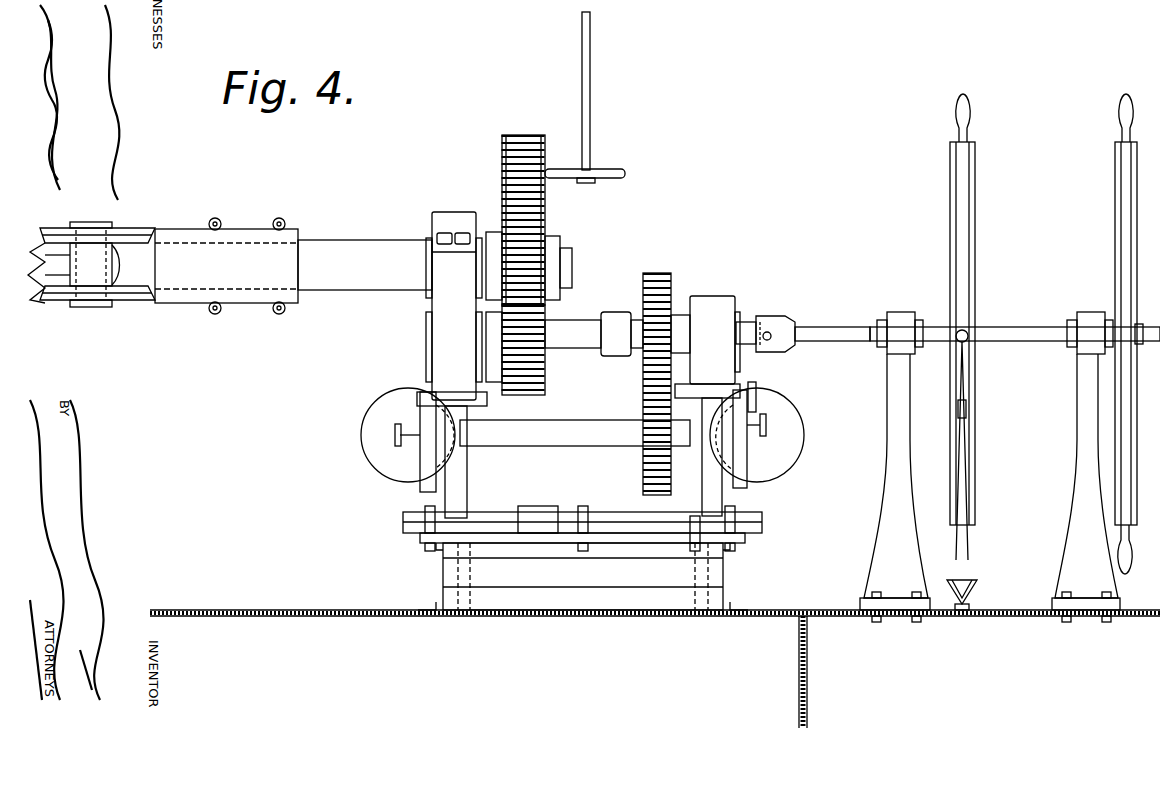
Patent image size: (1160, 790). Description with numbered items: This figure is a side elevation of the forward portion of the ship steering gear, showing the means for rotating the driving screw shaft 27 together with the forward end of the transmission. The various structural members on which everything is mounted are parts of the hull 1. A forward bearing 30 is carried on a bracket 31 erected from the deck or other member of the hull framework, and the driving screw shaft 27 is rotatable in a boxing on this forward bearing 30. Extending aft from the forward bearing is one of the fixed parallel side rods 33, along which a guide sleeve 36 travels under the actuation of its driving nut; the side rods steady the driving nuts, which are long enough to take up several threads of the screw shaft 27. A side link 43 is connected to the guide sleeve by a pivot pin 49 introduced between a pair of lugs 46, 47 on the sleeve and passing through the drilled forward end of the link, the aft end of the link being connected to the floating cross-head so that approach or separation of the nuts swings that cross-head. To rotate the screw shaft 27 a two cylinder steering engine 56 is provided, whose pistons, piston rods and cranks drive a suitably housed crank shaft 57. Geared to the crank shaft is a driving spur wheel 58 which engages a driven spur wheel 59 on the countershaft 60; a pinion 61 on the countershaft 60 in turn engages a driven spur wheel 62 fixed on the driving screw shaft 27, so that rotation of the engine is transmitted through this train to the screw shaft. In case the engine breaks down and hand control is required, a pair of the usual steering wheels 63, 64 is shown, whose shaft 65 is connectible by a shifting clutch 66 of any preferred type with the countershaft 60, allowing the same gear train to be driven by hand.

The hull member 1 is at (262, 620).
The driving screw shaft 27 is at (572, 265).
The forward bearing 30 is at (449, 232).
The bracket 31 is at (452, 437).
The side rod 33 is at (365, 265).
The guide sleeve 36 is at (226, 266).
The side link 43 is at (40, 285).
The lug 46 is at (132, 238).
The lug 47 is at (135, 293).
The pivot pin 49 is at (100, 222).
The two cylinder steering engine 56 is at (120, 266).
The crank shaft 57 is at (575, 433).
The driving spur wheel 58 is at (660, 455).
The driven spur wheel 59 is at (655, 295).
The countershaft 60 is at (750, 300).
The pinion 61 is at (530, 348).
The driven spur wheel 62 is at (528, 203).
The steering wheel 63 is at (918, 358).
The steering wheel 64 is at (1094, 358).
The steering wheel shaft 65 is at (1008, 343).
The shifting clutch 66 is at (775, 328).